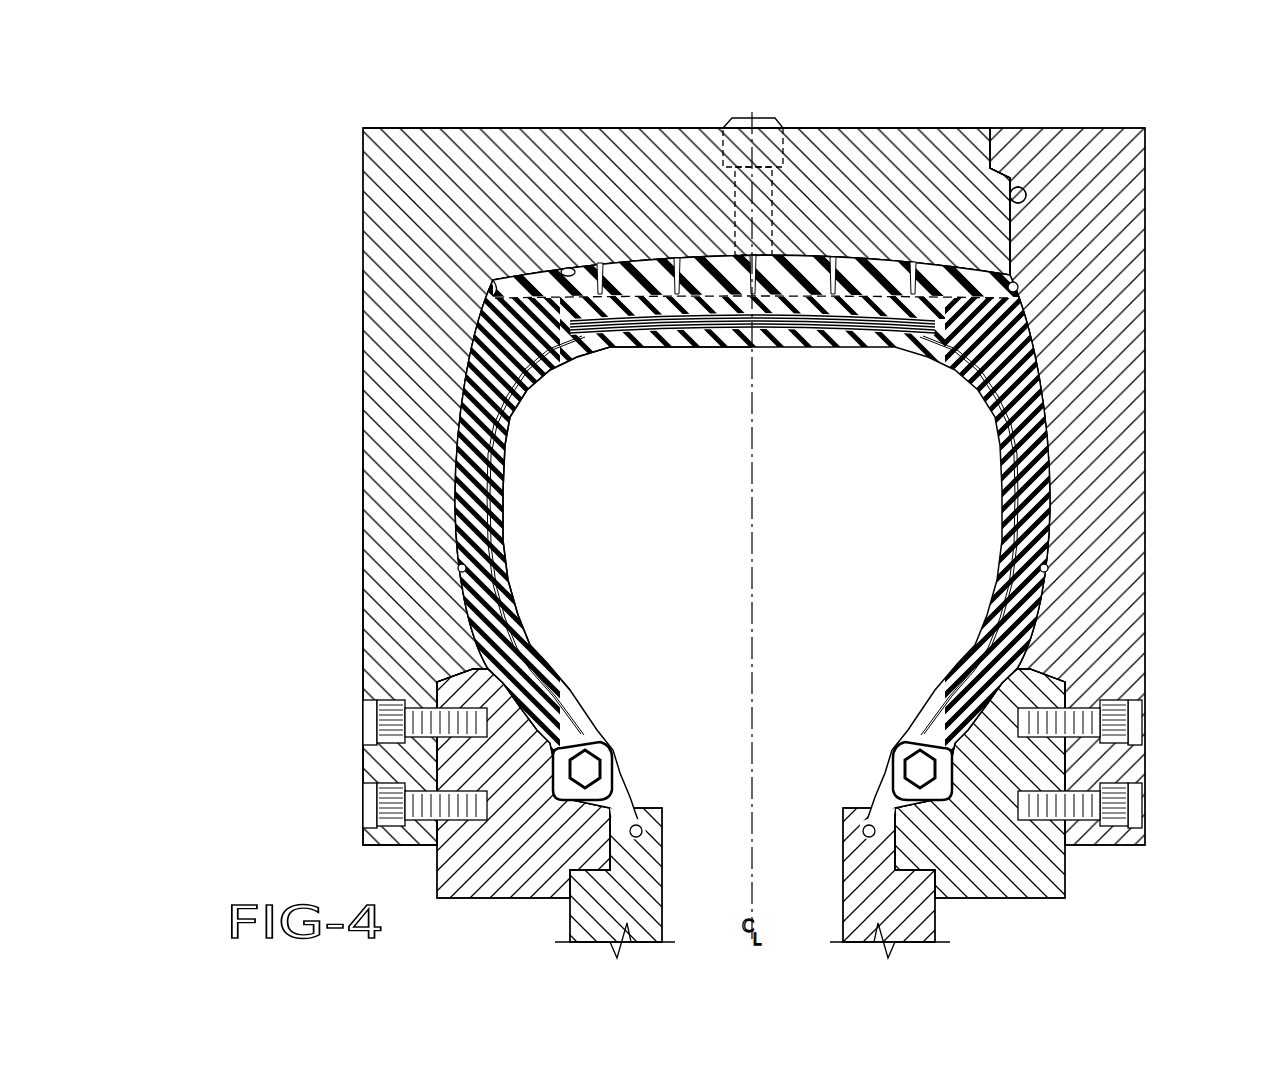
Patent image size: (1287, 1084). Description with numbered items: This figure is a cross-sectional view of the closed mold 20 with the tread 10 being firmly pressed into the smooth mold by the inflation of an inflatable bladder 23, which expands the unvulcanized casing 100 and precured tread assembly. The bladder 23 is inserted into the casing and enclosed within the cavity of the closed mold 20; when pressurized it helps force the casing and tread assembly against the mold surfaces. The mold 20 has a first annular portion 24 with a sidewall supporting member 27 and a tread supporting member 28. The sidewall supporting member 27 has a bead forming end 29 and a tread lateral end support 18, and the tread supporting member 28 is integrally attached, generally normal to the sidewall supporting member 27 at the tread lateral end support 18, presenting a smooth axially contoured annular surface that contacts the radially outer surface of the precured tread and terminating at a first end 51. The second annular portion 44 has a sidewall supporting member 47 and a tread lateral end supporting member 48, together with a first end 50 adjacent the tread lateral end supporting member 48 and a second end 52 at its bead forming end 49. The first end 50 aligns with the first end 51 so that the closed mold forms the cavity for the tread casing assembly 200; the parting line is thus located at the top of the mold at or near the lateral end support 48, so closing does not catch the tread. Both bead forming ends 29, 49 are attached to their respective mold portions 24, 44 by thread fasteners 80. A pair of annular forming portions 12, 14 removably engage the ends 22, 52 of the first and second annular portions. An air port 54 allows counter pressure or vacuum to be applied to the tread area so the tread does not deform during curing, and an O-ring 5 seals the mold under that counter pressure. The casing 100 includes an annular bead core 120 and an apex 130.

The O-ring 5 is at (1026, 190).
The tread 10 is at (655, 262).
The annular forming portion 12 is at (660, 828).
The annular forming portion 14 is at (845, 828).
The tread lateral end support 18 is at (493, 282).
The mold 20 is at (316, 205).
The end of first annular portion 22 is at (610, 848).
The inflatable bladder 23 is at (530, 420).
The first annular portion 24 is at (366, 407).
The sidewall supporting member 27 is at (462, 563).
The tread supporting member 28 is at (568, 268).
The bead forming end 29 is at (548, 745).
The second annular portion 44 is at (1145, 450).
The sidewall supporting member 47 is at (1046, 563).
The tread lateral end supporting member 48 is at (1018, 284).
The bead forming end 49 is at (958, 745).
The first end 50 is at (1008, 228).
The first end 51 is at (1012, 248).
The second end 52 is at (895, 848).
The air port 54 is at (778, 120).
The thread fasteners 80 is at (380, 720).
The casing 100 is at (997, 384).
The annular bead core 120 is at (588, 770).
The apex 130 is at (582, 748).
The tread casing assembly 200 is at (1055, 383).